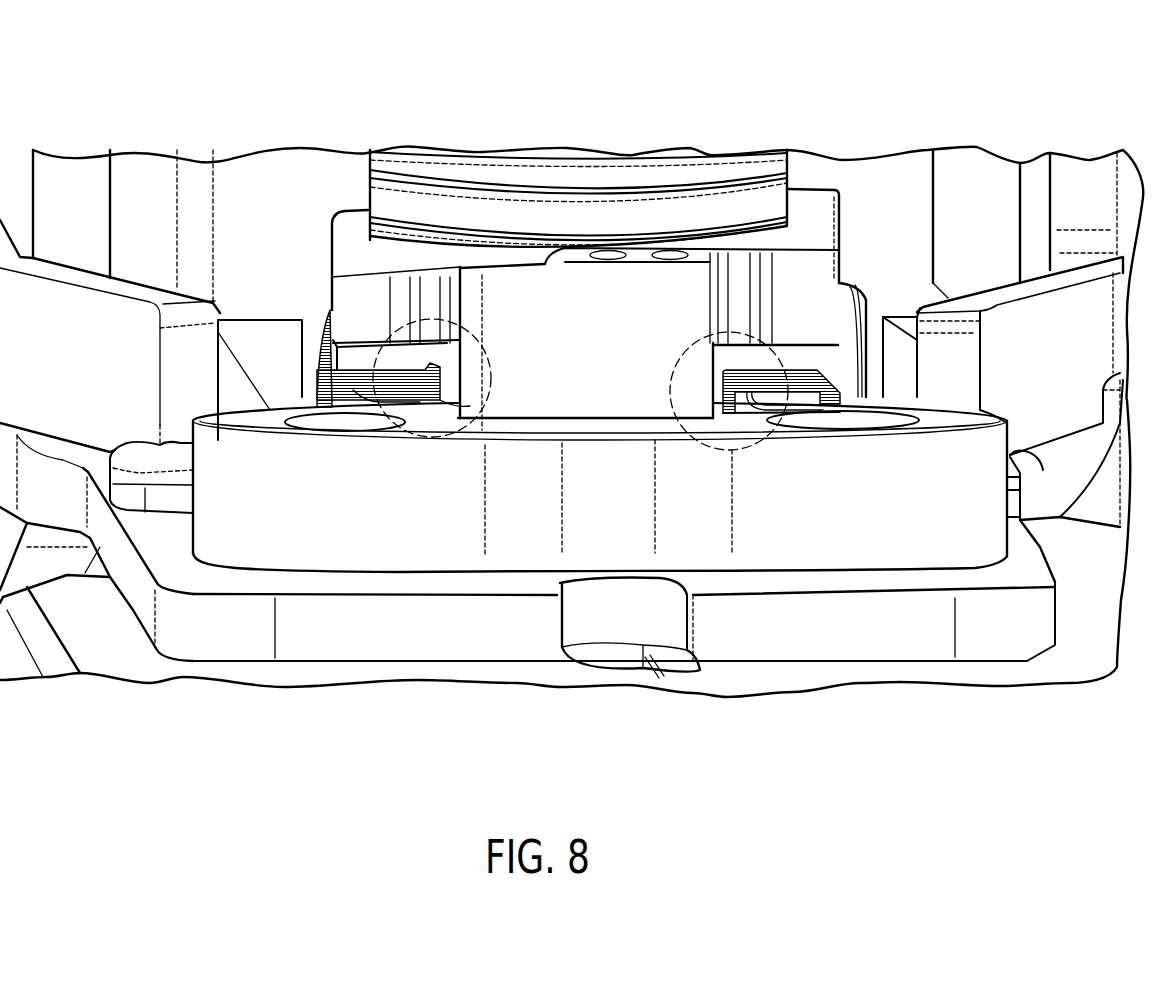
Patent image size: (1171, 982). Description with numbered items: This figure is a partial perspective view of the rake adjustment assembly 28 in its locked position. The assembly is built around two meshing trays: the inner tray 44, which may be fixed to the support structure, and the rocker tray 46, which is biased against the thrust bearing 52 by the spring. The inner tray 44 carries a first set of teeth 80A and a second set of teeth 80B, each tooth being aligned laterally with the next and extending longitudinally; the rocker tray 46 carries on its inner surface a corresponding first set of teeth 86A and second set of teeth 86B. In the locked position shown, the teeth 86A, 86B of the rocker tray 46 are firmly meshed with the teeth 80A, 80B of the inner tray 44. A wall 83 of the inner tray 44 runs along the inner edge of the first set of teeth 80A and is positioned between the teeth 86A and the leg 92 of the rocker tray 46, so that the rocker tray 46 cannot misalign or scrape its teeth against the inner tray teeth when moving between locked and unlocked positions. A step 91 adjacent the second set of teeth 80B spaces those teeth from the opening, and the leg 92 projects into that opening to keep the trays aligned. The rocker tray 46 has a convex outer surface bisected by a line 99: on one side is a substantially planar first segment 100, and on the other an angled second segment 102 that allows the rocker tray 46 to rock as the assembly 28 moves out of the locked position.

The rake adjustment assembly 28 is at (258, 143).
The thrust bearing 52 is at (380, 196).
The first segment 100 is at (812, 213).
The rocker tray 46 is at (850, 211).
The second segment 102 is at (350, 247).
The inner tray 44 is at (290, 393).
The line 99 is at (558, 256).
The first set of teeth 80A is at (305, 412).
The second set of teeth 80B is at (853, 408).
The first set of teeth 86A is at (338, 385).
The second set of teeth 86B is at (840, 405).
The wall 83 is at (445, 380).
The step 91 is at (704, 408).
The leg 92 is at (531, 419).